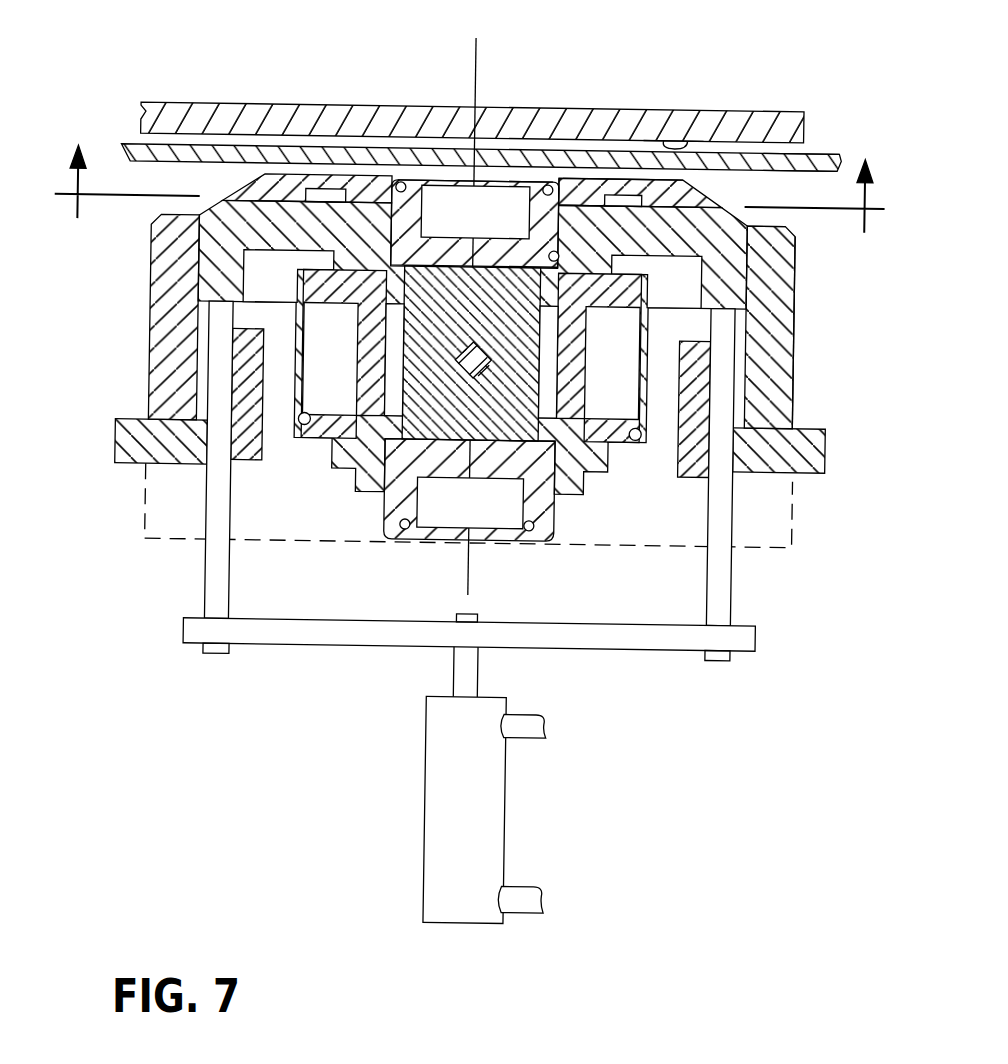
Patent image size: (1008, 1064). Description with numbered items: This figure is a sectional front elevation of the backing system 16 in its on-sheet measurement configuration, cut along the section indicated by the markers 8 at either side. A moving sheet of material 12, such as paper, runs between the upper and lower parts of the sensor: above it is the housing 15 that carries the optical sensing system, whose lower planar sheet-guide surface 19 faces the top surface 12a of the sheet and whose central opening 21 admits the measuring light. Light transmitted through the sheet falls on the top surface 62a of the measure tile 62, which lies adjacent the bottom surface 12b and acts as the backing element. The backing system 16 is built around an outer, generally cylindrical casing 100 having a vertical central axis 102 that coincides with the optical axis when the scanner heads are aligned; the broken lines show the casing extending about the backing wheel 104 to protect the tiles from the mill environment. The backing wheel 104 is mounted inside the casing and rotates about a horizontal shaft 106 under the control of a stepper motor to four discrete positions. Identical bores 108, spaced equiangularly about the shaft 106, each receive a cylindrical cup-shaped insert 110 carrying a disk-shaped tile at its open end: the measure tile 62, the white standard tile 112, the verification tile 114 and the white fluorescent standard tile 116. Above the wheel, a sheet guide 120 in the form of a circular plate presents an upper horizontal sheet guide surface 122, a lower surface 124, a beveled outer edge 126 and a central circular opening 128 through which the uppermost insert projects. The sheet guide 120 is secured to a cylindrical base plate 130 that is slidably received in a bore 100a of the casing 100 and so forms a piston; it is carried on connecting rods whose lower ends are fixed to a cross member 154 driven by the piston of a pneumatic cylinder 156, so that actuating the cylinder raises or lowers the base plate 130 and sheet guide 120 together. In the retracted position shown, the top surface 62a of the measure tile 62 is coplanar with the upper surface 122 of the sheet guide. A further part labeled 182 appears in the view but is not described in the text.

The section line 8- 8 is at (475, 178).
The sheet of material 12 is at (830, 156).
The top surface 12a is at (810, 144).
The bottom surface 12b is at (804, 166).
The housing 15 is at (725, 114).
The backing system 16 is at (805, 258).
The lower planar sheet-guide surface 19 is at (654, 140).
The central opening 21 is at (575, 188).
The measure tile 62 is at (466, 202).
The top surface of tile 62a is at (438, 180).
The outer cylindrical casing 100 is at (793, 373).
The bore 100a is at (746, 301).
The vertical central axis 102 is at (471, 90).
The backing wheel 104 is at (349, 491).
The horizontal shaft 106 is at (481, 348).
The bores 108 is at (590, 259).
The cup-shaped insert 110 is at (389, 320).
The white standard tile 112 is at (790, 340).
The verification tile 114 is at (492, 540).
The white fluorescent standard tile 116 is at (289, 325).
The sheet guide 120 is at (709, 189).
The upper horizontal sheet guide surface 122 is at (647, 175).
The lower surface 124 is at (654, 217).
The beveled outer edge 126 is at (247, 182).
The central circular opening 128 is at (578, 192).
The cylindrical base plate 130 is at (785, 248).
The cross member 154 is at (602, 651).
The pneumatic cylinder 156 is at (431, 794).
The fastener 182 is at (366, 178).